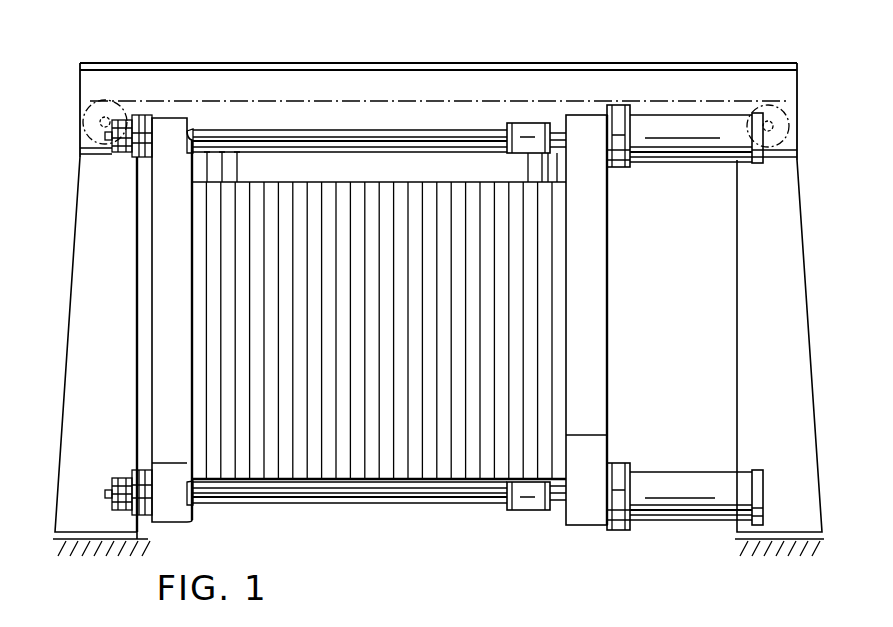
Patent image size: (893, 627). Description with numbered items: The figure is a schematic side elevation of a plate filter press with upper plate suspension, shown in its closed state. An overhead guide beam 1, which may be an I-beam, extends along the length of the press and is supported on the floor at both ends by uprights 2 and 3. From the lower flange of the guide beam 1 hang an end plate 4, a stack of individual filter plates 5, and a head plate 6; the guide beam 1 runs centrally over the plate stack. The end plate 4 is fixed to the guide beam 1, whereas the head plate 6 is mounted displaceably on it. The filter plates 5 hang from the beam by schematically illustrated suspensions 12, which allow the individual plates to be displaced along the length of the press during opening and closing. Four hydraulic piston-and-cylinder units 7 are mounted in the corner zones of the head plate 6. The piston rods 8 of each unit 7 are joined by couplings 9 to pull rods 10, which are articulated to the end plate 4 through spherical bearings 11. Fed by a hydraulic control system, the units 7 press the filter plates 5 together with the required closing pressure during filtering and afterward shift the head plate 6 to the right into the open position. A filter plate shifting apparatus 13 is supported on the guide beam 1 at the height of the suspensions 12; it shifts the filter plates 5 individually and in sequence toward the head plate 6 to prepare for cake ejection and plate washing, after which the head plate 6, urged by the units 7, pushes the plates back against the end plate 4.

The guide beam 1 is at (457, 83).
The upright 2 is at (98, 196).
The upright 3 is at (748, 310).
The end plate 4 is at (165, 342).
The filter plates 5 is at (256, 473).
The head plate 6 is at (597, 366).
The hydraulic piston-and-cylinder units 7 is at (683, 145).
The piston rods 8 is at (562, 137).
The couplings 9 is at (527, 130).
The pull rods 10 is at (340, 128).
The spherical bearings 11 is at (139, 108).
The suspensions 12 is at (228, 168).
The filter plate shifting apparatus 13 is at (613, 98).